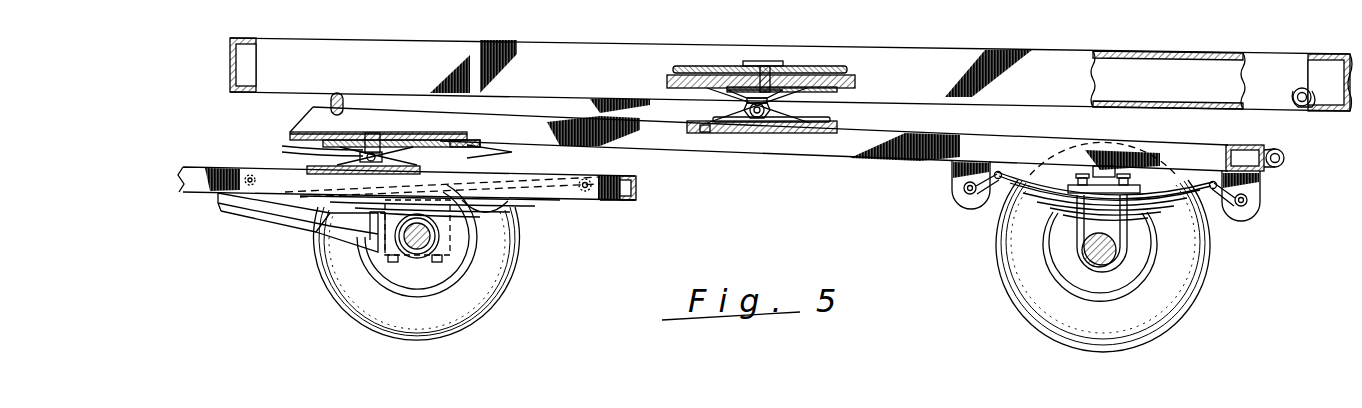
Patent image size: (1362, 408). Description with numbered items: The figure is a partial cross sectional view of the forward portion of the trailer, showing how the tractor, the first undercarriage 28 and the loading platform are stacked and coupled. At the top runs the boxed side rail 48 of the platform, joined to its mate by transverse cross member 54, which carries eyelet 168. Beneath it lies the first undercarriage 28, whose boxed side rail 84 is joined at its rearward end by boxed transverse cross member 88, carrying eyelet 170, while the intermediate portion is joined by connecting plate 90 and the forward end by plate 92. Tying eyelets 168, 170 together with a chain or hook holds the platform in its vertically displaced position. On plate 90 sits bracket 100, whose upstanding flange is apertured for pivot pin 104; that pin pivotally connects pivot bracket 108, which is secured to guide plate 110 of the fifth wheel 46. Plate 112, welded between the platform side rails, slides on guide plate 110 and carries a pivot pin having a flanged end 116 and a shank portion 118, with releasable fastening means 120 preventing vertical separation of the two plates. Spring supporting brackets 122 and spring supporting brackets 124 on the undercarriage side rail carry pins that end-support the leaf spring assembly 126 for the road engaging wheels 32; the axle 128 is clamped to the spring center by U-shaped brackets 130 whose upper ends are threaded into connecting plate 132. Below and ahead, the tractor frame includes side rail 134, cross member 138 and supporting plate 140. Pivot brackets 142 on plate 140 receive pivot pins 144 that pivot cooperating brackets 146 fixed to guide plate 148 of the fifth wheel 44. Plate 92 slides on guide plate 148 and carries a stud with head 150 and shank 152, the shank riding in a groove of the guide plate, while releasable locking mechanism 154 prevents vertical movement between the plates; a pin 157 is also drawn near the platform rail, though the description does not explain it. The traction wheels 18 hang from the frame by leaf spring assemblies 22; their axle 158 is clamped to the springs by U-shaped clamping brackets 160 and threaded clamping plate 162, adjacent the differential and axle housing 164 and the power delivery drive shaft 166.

The traction wheels 18 is at (497, 300).
The spring suspension mechanisms 22 is at (500, 205).
The first undercarriage 28 is at (848, 160).
The road engaging wheels 32 is at (1200, 262).
The fifth wheel 44 is at (288, 139).
The fifth wheel 46 is at (815, 72).
The side rail 48 is at (980, 60).
The transverse cross member 54 is at (1318, 62).
The side rail 84 is at (882, 140).
The transverse cross member 88 is at (1246, 145).
The connecting plate 90 is at (712, 134).
The plate 92 is at (470, 140).
The bracket 100 is at (740, 134).
The pivot pin 104 is at (770, 109).
The pivot bracket 108 is at (732, 70).
The guide plate 110 is at (856, 87).
The plate 112 is at (850, 74).
The flanged end 116 is at (776, 64).
The shank portion 118 is at (763, 61).
The releasable fastening means 120 is at (745, 97).
The spring supporting brackets 122 is at (955, 170).
The spring supporting brackets 124 is at (1268, 198).
The leaf spring assembly 126 is at (1195, 226).
The axle 128 is at (1096, 254).
The U-bolt 130 is at (1080, 235).
The connecting plate 132 is at (1130, 185).
The side rail 134 is at (615, 200).
The transverse cross member 138 is at (636, 188).
The supporting plate 140 is at (470, 173).
The pivot brackets 142 is at (345, 168).
The pivot pins 144 is at (384, 157).
The cooperating brackets 146 is at (283, 149).
The guide plate 148 is at (480, 145).
The head 150 is at (355, 133).
The shank 152 is at (370, 140).
The releasable locking mechanism 154 is at (420, 140).
The locking pin 157 is at (340, 98).
The axle 158 is at (417, 250).
The U-shaped clamping brackets 160 is at (476, 243).
The threaded clamping plate 162 is at (465, 257).
The differential and axle housing 164 is at (385, 258).
The power delivery drive shaft 166 is at (265, 217).
The eyelet 168 is at (1303, 107).
The eyelet 170 is at (1284, 158).